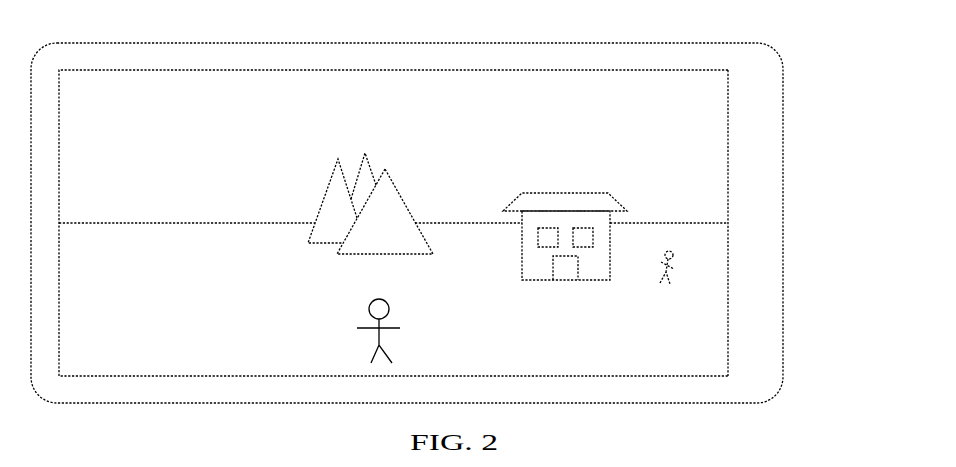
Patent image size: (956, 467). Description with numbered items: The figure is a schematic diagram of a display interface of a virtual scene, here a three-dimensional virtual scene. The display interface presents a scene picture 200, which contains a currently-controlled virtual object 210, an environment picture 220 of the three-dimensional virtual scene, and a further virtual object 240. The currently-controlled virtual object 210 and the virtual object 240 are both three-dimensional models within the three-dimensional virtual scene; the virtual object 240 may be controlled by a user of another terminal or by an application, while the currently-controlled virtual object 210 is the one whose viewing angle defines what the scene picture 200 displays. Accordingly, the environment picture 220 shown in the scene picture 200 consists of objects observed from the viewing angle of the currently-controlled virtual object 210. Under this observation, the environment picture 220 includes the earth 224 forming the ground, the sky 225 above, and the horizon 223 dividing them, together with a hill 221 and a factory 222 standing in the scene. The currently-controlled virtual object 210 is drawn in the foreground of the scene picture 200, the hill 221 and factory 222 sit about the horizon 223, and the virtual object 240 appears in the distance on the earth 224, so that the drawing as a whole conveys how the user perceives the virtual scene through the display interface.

The scene picture 200 is at (103, 104).
The currently-controlled virtual object 210 is at (408, 312).
The environment picture 220 is at (638, 84).
The hill 221 is at (398, 189).
The factory 222 is at (588, 189).
The horizon 223 is at (194, 217).
The earth 224 is at (713, 249).
The sky 225 is at (718, 162).
The virtual object 240 is at (683, 263).